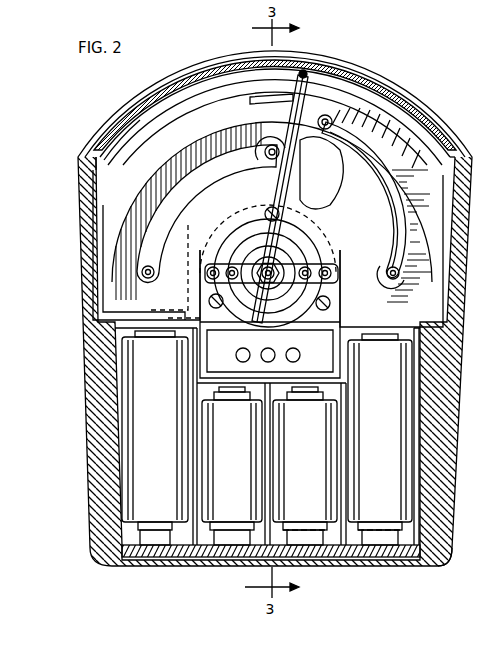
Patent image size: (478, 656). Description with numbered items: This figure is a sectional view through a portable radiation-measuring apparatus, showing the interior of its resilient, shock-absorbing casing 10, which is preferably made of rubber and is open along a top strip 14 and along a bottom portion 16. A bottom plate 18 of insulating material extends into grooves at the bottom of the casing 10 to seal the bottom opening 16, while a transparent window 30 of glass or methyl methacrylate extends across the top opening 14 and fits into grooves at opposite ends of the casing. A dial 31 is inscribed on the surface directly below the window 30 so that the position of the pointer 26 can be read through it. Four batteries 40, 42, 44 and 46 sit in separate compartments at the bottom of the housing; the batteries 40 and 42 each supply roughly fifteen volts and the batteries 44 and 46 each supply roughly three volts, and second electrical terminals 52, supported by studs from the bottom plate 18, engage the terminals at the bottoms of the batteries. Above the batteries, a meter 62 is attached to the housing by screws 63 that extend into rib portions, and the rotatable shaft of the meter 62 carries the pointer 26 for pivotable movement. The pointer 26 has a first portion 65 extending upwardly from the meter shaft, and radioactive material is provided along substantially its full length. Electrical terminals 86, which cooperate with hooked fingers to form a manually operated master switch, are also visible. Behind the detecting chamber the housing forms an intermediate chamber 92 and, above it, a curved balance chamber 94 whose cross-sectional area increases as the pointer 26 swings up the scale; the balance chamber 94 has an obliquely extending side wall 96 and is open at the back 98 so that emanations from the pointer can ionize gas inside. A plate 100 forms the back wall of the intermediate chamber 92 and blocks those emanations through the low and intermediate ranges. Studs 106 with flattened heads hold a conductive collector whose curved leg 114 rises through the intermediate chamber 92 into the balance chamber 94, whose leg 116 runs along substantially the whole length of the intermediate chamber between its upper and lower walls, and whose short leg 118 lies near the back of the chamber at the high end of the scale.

The casing 10 is at (77, 430).
The top strip opening 14 is at (105, 137).
The bottom portion opening 16 is at (412, 563).
The bottom plate 18 is at (176, 558).
The pointer 26 is at (290, 190).
The transparent window 30 is at (358, 90).
The dial 31 is at (276, 80).
The battery 40 is at (232, 466).
The battery 42 is at (305, 466).
The battery 44 is at (155, 438).
The battery 46 is at (380, 439).
The second electrical terminals 52 is at (350, 551).
The meter 62 is at (208, 296).
The screws 63 is at (337, 312).
The first portion of pointer 65 is at (313, 92).
The electrical terminals 86 is at (235, 357).
The intermediate chamber 92 is at (405, 145).
The balance chamber 94 is at (207, 105).
The side wall 96 is at (382, 148).
The open back 98 is at (166, 114).
The plate 100 is at (368, 219).
The studs 106 is at (140, 274).
The collector leg 114 is at (384, 179).
The collector leg 116 is at (163, 186).
The collector leg 118 is at (394, 239).